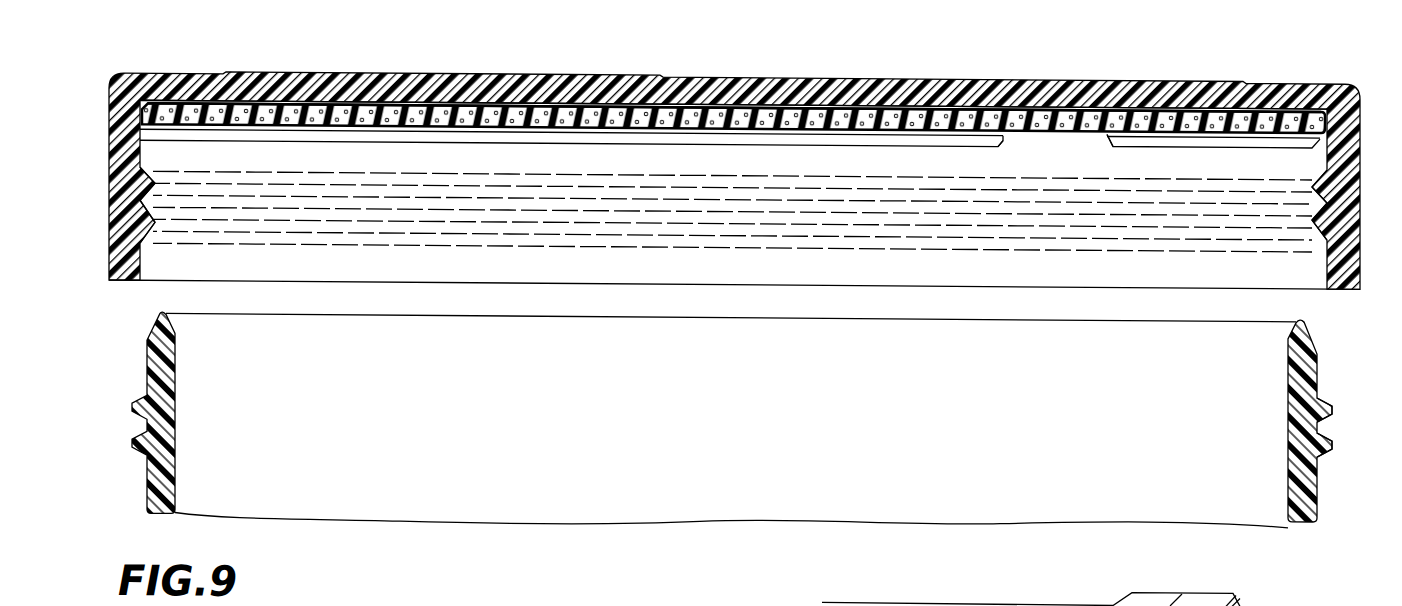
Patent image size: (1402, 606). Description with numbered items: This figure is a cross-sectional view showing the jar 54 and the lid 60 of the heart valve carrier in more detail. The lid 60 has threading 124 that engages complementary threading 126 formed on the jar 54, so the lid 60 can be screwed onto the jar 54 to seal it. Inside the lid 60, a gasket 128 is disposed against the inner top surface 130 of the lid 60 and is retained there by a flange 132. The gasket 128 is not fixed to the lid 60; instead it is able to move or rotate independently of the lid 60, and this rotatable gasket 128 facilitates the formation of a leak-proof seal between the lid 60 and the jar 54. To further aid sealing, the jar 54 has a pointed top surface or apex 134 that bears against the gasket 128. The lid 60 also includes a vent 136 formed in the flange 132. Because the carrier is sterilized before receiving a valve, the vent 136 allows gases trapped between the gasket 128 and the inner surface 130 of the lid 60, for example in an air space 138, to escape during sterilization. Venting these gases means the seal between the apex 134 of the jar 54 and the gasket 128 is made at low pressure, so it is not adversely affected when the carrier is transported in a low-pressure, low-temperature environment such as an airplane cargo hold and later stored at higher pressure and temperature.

The jar 54 is at (1335, 461).
The lid 60 is at (1305, 64).
The threading 124 is at (1290, 181).
The complementary threading 126 is at (1325, 391).
The gasket 128 is at (925, 112).
The inner top surface 130 is at (217, 103).
The flange 132 is at (1152, 134).
The apex 134 is at (1300, 309).
The vent 136 is at (1033, 135).
The air space 138 is at (443, 100).